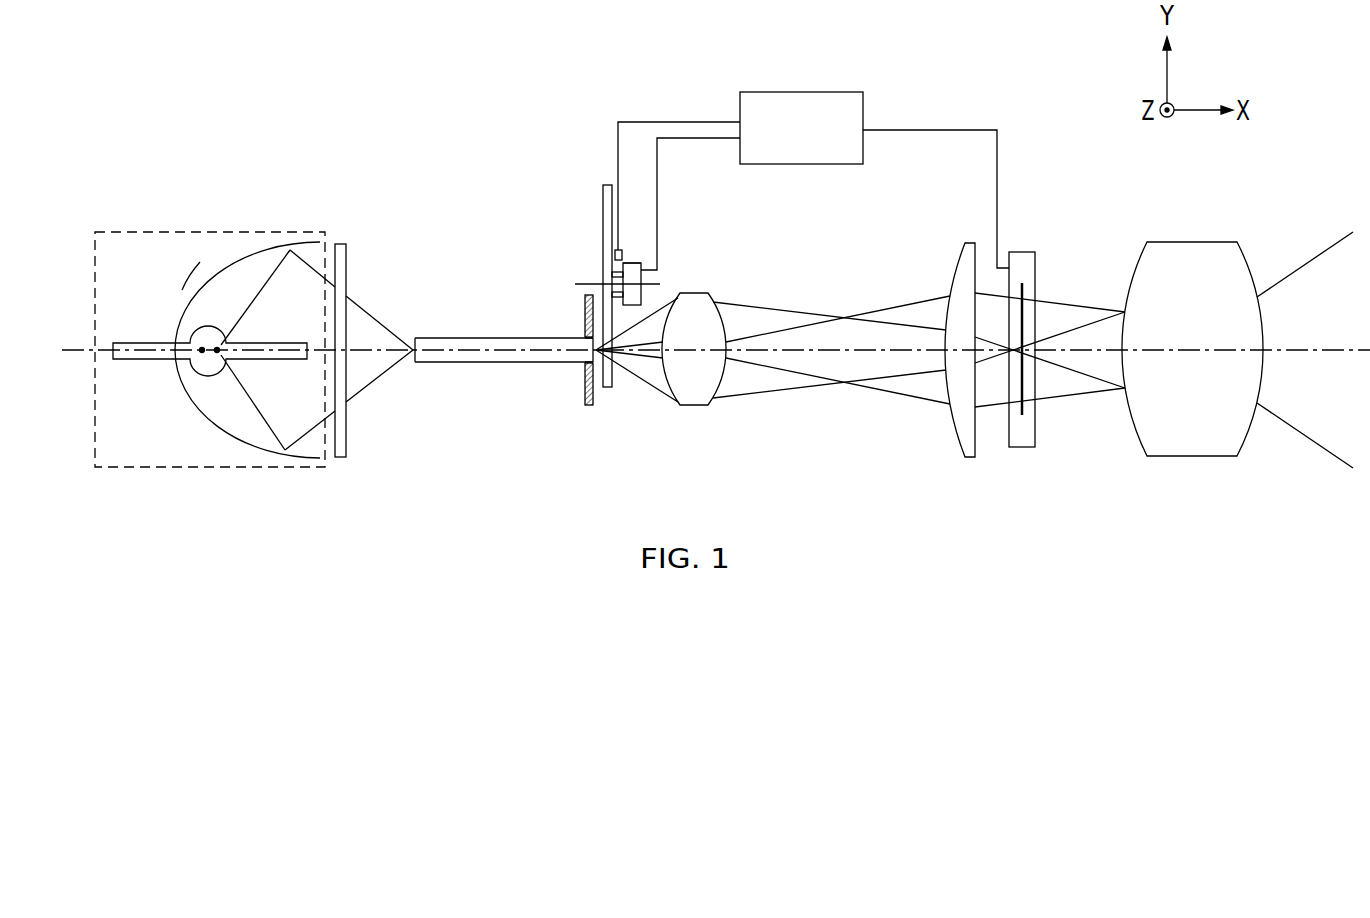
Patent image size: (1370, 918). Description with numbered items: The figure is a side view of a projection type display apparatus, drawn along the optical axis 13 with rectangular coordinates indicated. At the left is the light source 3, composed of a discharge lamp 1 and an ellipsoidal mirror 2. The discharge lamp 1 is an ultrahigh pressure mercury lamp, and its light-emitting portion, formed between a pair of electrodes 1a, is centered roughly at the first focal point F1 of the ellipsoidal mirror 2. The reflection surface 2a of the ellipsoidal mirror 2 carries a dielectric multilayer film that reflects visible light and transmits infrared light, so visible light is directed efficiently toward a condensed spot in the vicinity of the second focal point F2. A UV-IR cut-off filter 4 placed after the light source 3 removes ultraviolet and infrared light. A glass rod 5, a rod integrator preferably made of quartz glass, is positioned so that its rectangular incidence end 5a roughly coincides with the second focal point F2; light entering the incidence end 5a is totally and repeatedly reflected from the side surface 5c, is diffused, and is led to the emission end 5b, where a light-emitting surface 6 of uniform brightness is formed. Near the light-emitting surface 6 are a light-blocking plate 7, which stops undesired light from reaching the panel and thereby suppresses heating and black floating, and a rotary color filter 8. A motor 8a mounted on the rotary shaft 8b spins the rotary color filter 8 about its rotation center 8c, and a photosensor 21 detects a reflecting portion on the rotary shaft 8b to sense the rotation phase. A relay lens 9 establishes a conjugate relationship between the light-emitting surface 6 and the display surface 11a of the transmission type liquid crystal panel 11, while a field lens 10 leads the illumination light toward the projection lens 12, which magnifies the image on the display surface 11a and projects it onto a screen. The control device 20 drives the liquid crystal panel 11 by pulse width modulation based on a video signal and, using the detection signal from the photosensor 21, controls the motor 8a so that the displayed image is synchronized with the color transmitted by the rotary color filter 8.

The discharge lamp 1 is at (135, 342).
The pair of electrodes 1a is at (200, 357).
The ellipsoidal mirror 2 is at (180, 301).
The reflection surface 2a is at (213, 288).
The light source 3 is at (217, 232).
The UV-IR cut-off filter 4 is at (340, 244).
The glass rod 5 is at (468, 336).
The incidence end 5a is at (413, 340).
The emission end 5b is at (585, 364).
The side surface 5c is at (481, 364).
The light-emitting surface 6 is at (587, 337).
The light-blocking plate 7 is at (585, 312).
The rotary color filter 8 is at (603, 179).
The motor 8a is at (634, 262).
The rotary shaft 8b is at (626, 305).
The rotation center 8c is at (597, 282).
The relay lens 9 is at (702, 293).
The field lens 10 is at (972, 243).
The liquid crystal panel 11 is at (1023, 252).
The display surface 11a is at (1024, 287).
The projection lens 12 is at (1195, 242).
The optical axis 13 is at (826, 355).
The control device 20 is at (814, 92).
The photosensor 21 is at (620, 250).
The first focal point F1 is at (209, 358).
The second focal point F2 is at (413, 362).